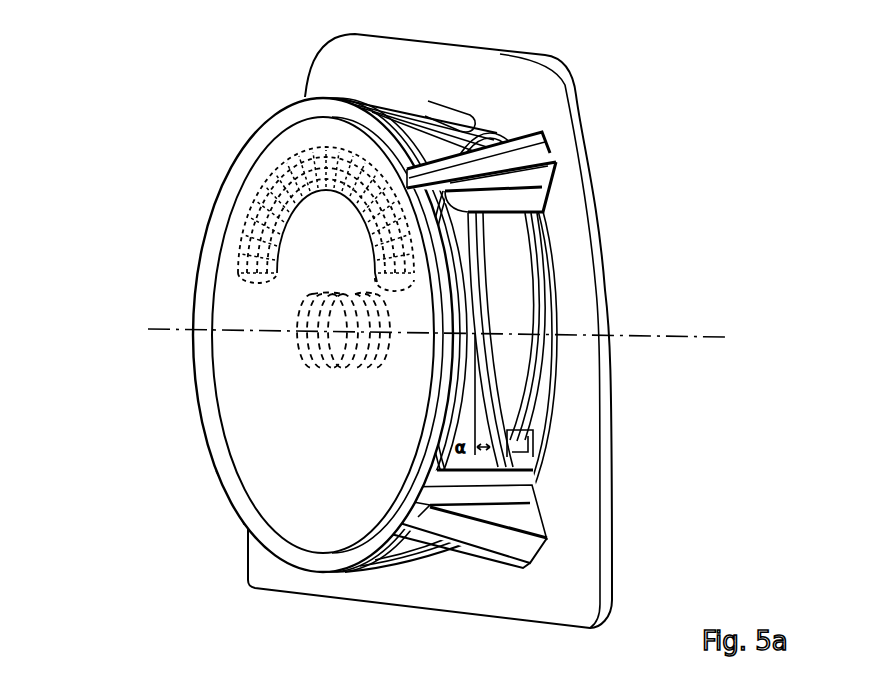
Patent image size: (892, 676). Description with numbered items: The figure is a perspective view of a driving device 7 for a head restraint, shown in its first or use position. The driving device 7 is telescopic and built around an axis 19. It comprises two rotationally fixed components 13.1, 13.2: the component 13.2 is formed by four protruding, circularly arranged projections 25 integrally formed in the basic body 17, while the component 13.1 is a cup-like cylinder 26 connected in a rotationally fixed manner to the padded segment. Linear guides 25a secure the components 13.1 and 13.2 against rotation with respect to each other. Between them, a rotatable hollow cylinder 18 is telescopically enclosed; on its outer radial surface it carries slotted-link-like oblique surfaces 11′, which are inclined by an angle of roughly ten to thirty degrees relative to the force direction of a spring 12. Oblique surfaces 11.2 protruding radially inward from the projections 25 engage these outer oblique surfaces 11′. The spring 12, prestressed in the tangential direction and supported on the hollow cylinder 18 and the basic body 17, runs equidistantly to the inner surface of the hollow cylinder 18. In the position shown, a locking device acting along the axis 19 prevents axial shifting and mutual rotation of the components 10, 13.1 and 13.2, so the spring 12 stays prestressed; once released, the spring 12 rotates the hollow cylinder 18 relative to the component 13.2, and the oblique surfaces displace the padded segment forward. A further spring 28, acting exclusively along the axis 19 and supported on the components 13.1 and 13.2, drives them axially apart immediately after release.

The driving device 7 is at (662, 156).
The component 10 is at (532, 292).
The hollow cylinder 18 is at (528, 335).
The oblique surfaces 11.2 is at (477, 223).
The outer oblique surfaces 11′ is at (507, 428).
The spring 12 is at (240, 266).
The rotationally fixed component 13.1 is at (259, 335).
The rotationally fixed component 13.2 is at (515, 200).
The basic body 17 is at (575, 405).
The axis 19 is at (660, 337).
The projections 25 is at (573, 194).
The linear guides 25a is at (531, 153).
The cylinder 26 is at (290, 457).
The further spring 28 is at (312, 367).